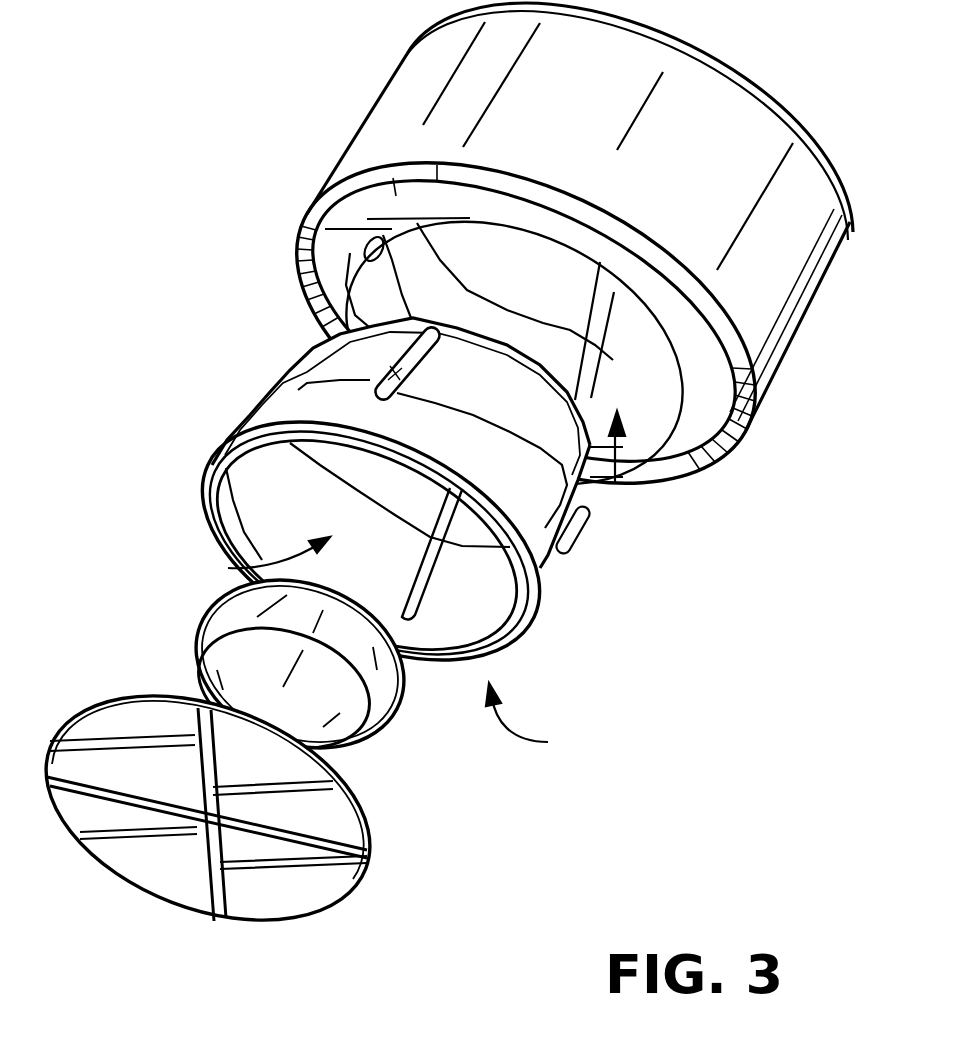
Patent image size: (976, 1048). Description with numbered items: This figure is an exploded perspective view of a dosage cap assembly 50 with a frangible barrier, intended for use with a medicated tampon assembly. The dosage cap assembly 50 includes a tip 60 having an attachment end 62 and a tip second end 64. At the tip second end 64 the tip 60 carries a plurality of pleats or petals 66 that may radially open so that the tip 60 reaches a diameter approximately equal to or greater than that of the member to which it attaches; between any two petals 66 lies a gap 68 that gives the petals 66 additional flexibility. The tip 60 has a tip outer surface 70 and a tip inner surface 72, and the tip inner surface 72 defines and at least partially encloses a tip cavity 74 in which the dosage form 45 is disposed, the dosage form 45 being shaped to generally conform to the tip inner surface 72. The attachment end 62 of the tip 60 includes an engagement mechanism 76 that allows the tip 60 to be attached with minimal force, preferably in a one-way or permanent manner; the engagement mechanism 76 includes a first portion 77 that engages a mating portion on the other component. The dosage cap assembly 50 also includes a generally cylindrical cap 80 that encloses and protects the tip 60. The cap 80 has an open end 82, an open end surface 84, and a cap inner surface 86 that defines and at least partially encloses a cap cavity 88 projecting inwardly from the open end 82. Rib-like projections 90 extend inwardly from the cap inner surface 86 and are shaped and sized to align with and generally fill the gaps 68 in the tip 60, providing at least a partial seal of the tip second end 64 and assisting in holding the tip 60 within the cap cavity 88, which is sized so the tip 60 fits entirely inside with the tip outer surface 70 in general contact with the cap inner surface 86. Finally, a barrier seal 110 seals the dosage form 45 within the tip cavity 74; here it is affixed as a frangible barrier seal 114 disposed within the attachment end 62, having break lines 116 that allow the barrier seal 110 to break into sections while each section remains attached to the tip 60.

The dosage form 45 is at (395, 713).
The dosage cap assembly 50 is at (453, 483).
The tip 60 is at (396, 537).
The attachment end 62 is at (517, 643).
The tip second end 64 is at (317, 350).
The pleats or petals 66 is at (504, 405).
The gap 68 is at (397, 358).
The tip outer surface 70 is at (467, 452).
The tip inner surface 72 is at (307, 522).
The tip cavity 74 is at (233, 567).
The engagement mechanism 76 is at (536, 721).
The first portion 77 is at (480, 657).
The cap 80 is at (559, 276).
The open end 82 is at (722, 447).
The open end surface 84 is at (680, 450).
The cap inner surface 86 is at (450, 300).
The cap cavity 88 is at (615, 483).
The rib-like projections 90 is at (358, 257).
The barrier seal 110 is at (237, 808).
The frangible barrier seal 114 is at (330, 908).
The break lines 116 is at (343, 834).